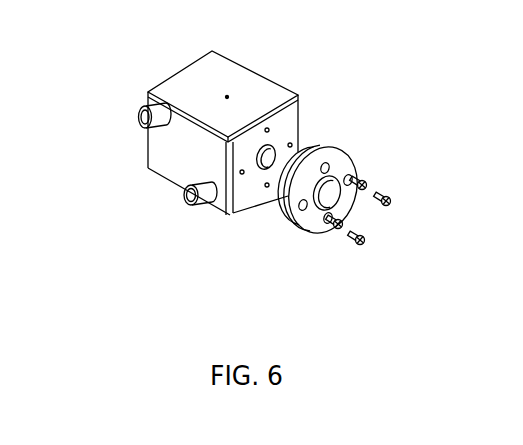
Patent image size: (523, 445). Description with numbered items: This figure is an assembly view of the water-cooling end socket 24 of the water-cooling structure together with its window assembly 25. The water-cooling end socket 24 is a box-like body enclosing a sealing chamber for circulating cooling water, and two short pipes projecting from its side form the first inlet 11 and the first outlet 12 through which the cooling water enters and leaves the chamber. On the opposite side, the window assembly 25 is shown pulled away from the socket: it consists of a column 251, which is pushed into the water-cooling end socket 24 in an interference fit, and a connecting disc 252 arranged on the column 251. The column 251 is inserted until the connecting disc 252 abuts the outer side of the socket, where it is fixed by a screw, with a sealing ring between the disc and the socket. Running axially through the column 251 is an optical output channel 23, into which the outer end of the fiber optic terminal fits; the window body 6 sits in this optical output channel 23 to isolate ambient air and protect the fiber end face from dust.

The water-cooling end socket 24 is at (258, 74).
The first outlet 12 is at (140, 113).
The first inlet 11 is at (185, 194).
The window assembly 25 is at (277, 191).
The column 251 is at (307, 158).
The connecting disc 252 is at (348, 161).
The optical output channel 23 is at (364, 181).
The window body 6 is at (302, 230).